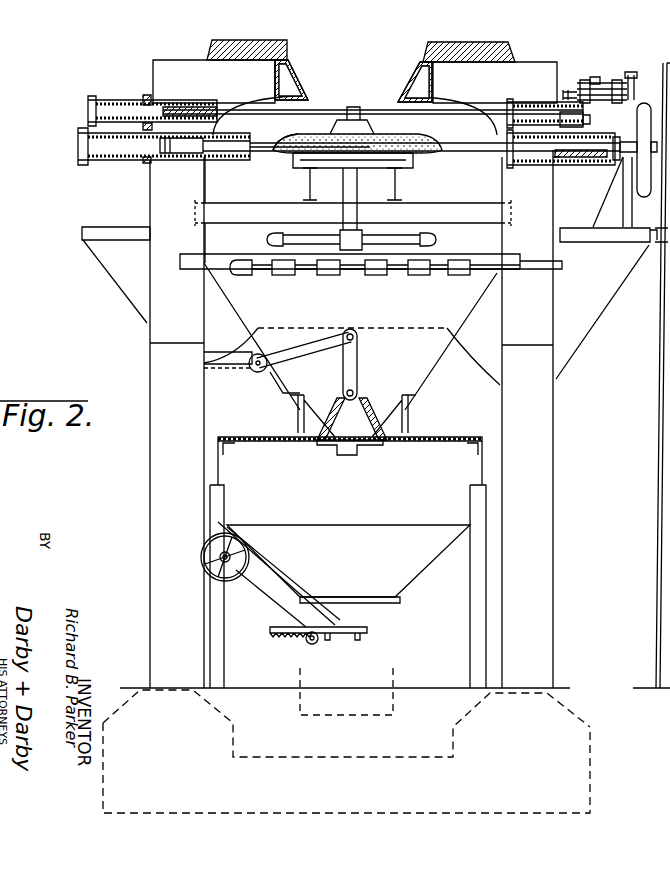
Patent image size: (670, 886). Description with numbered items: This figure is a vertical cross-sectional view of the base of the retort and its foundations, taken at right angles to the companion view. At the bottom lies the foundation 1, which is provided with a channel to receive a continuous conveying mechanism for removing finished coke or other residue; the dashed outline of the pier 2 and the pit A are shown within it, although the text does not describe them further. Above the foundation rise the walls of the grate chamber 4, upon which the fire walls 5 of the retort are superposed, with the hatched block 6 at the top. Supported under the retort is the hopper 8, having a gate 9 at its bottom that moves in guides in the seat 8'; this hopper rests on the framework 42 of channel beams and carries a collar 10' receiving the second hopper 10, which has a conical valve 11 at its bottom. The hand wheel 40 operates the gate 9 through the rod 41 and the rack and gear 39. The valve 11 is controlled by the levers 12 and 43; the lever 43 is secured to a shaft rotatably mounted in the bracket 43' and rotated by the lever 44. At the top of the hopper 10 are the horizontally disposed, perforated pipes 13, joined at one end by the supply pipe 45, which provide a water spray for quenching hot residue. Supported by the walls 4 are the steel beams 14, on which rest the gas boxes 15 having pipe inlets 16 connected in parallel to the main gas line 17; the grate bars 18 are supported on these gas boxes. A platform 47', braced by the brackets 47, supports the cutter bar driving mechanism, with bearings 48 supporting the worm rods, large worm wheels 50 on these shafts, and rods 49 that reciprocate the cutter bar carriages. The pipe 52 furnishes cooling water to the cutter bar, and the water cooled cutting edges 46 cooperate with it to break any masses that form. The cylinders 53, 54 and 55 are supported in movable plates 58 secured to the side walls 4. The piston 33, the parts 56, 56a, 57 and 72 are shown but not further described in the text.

The foundation 1 is at (357, 768).
The foundation pier 2 is at (346, 725).
The pit A is at (354, 705).
The grate chamber 4 is at (143, 391).
The fire walls 5 is at (401, 49).
The hatched block 6 is at (231, 47).
The hopper 8 is at (350, 517).
The seat 8' is at (361, 605).
The gate 9 is at (333, 639).
The second hopper 10 is at (352, 283).
The collar 10' is at (368, 416).
The conical valve 11 is at (353, 438).
The lever 12 is at (369, 364).
The horizontally disposed pipes 13 is at (375, 284).
The steel beams 14 is at (353, 200).
The gas boxes 15 is at (354, 167).
The pipe inlets 16 is at (342, 209).
The main gas line 17 is at (365, 243).
The grate bars 18 is at (266, 162).
The piston 33 is at (611, 375).
The rack and gear 39 is at (289, 653).
The hand wheel 40 is at (200, 569).
The rod 41 is at (279, 579).
The framework 42 is at (348, 586).
The lever 43 is at (300, 357).
The bracket 43' is at (273, 394).
The lever 44 is at (228, 379).
The supply pipe 45 is at (527, 422).
The water cooled cutting edges 46 is at (353, 79).
The brackets 47 is at (395, 270).
The platform 47' is at (612, 303).
The bearings 48 is at (594, 192).
The rods 49 is at (592, 192).
The worm wheels 50 is at (640, 138).
The pipe 52 is at (373, 107).
The cylinder 53 is at (582, 171).
The cylinder 54 is at (349, 161).
The cylinder 55 is at (335, 99).
The bolt 56 is at (595, 76).
The housing 56a is at (597, 124).
The bracket 57 is at (645, 73).
The movable plates 58 is at (531, 190).
The pin 72 is at (610, 63).